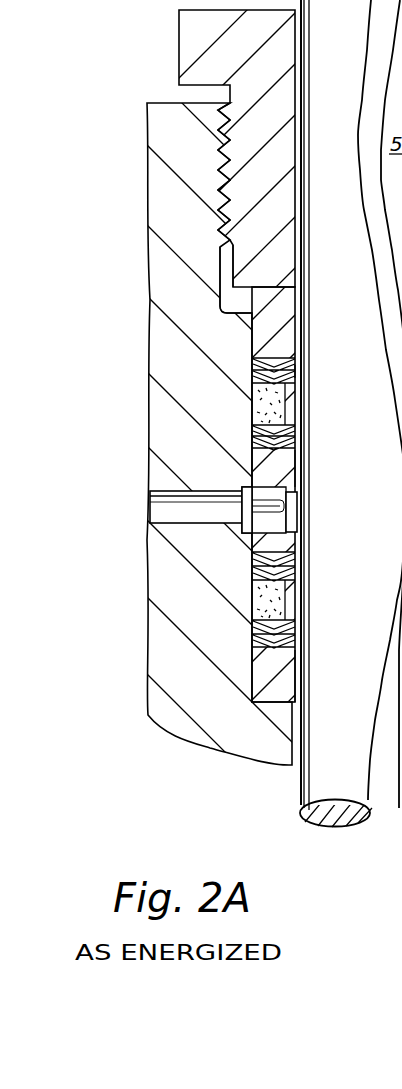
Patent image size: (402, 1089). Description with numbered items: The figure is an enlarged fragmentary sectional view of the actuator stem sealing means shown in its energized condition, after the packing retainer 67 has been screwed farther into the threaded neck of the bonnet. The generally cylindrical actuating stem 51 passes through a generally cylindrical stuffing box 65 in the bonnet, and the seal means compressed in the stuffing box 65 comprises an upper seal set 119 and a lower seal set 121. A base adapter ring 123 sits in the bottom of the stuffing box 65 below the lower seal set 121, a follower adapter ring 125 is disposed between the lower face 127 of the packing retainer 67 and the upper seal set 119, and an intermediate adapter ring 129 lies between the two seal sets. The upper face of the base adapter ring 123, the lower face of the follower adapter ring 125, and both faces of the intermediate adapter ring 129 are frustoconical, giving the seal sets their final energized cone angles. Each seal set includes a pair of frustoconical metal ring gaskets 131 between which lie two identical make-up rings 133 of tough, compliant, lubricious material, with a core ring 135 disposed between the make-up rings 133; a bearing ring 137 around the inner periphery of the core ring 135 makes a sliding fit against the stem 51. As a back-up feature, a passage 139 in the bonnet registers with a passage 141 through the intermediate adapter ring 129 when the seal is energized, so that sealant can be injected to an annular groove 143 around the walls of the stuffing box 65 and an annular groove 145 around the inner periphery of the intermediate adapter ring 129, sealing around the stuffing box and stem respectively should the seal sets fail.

The actuating stem 51 is at (356, 246).
The stuffing box 65 is at (250, 332).
The packing retainer 67 is at (178, 40).
The upper seal set 119 is at (339, 348).
The lower seal set 121 is at (336, 547).
The base adapter ring 123 is at (300, 681).
The follower adapter ring 125 is at (302, 293).
The lower face of packing retainer 127 is at (245, 308).
The intermediate adapter ring 129 is at (300, 465).
The frustoconical metal ring gasket 131 is at (252, 365).
The make-up ring 133 is at (252, 378).
The core ring 135 is at (252, 403).
The bearing ring 137 is at (306, 393).
The passage 139 is at (166, 522).
The passage 141 is at (280, 508).
The annular groove 143 is at (242, 531).
The annular groove 145 is at (300, 525).